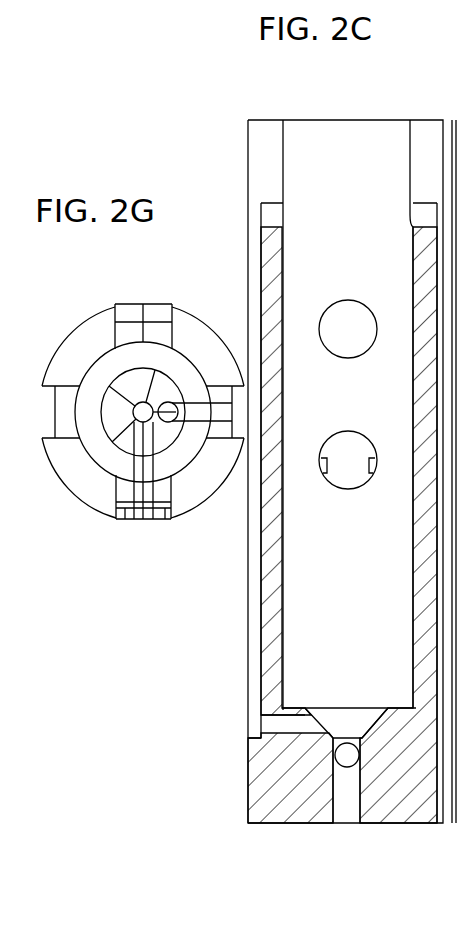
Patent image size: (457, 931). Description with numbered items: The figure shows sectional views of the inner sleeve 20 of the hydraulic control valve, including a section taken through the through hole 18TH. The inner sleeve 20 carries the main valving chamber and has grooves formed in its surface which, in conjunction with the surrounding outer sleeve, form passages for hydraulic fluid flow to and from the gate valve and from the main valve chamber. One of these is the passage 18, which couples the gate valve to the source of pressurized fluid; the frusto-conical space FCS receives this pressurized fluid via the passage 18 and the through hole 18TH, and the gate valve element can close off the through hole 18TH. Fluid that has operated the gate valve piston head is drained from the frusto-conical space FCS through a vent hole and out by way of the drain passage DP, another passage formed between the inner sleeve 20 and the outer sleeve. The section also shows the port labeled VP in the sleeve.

In FIG. 2C, the inner sleeve 20 is at (348, 133).
In FIG. 2G, the inner sleeve 20 is at (97, 311).
In FIG. 2C, the drain passage DP is at (247, 648).
In FIG. 2C, the frusto-conical space FCS is at (340, 718).
In FIG. 2G, the vent passage VP is at (176, 404).
In FIG. 2G, the passage 18 is at (153, 523).
In FIG. 2G, the through hole 18TH is at (156, 469).